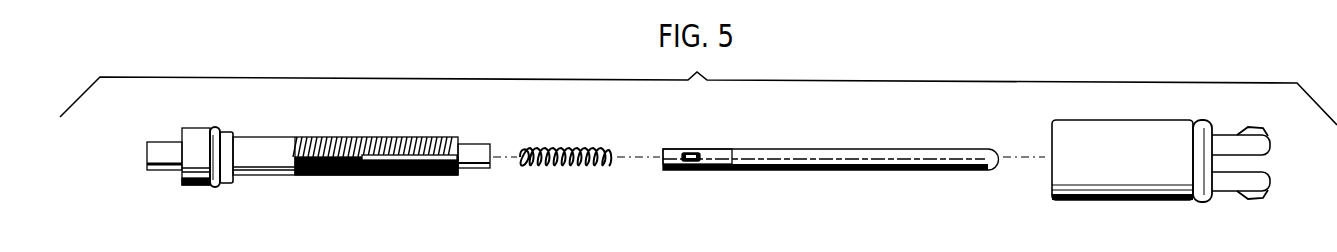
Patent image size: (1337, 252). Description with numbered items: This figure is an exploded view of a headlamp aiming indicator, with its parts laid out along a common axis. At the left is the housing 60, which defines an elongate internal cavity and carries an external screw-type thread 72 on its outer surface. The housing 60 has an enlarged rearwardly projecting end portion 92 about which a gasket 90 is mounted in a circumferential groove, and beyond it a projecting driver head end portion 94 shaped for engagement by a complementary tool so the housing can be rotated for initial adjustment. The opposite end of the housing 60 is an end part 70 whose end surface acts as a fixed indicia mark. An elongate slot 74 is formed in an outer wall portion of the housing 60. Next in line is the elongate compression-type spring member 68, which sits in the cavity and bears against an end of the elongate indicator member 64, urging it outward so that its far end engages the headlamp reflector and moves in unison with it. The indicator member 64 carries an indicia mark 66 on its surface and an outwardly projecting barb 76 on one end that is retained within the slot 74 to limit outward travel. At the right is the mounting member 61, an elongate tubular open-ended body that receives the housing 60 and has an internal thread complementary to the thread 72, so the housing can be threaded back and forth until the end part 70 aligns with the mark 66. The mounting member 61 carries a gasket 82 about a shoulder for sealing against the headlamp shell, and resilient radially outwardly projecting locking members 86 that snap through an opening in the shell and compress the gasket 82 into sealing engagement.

The housing 60 is at (376, 142).
The mounting member 61 is at (1093, 202).
The elongate indicator member 64 is at (863, 151).
The indicia mark 66 is at (734, 150).
The spring member 68 is at (543, 148).
The end part of the housing 70 is at (492, 145).
The external screw-type thread 72 is at (403, 176).
The elongate slot 74 is at (407, 155).
The barb 76 is at (700, 172).
The gasket 82 is at (1210, 204).
The locking members 86 is at (1268, 198).
The gasket 90 is at (216, 126).
The enlarged rearwardly projecting end portion 92 is at (182, 184).
The driver head end portion 94 is at (158, 172).